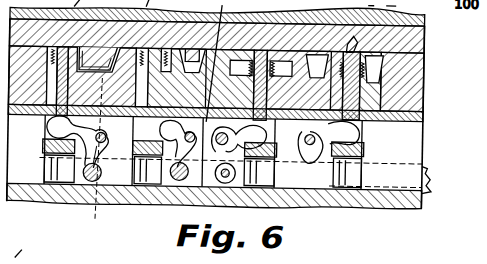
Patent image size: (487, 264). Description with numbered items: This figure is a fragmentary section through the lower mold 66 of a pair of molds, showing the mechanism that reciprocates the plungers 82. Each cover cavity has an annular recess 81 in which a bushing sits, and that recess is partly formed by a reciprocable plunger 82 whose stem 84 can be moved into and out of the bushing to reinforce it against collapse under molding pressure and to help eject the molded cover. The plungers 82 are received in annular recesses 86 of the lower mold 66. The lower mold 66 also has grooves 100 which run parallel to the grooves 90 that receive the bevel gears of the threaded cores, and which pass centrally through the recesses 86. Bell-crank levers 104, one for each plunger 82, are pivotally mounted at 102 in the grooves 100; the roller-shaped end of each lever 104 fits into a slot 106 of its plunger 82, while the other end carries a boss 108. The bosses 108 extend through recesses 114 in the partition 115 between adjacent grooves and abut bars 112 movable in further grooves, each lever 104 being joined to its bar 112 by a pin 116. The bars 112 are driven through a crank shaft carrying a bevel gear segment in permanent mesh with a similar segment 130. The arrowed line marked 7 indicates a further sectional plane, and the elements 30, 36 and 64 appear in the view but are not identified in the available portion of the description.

The punch tool / section line 7- 7 is at (118, 92).
The base plate 30 is at (402, 205).
The upper member 36 is at (214, 61).
The drive element 64 is at (32, 249).
The lower mold 66 is at (423, 109).
The annular recess 81 is at (53, 89).
The stem 84 is at (166, 93).
The annular recess 86 is at (56, 171).
The reciprocable plunger 82 is at (43, 151).
The parallel groove 90 is at (217, 13).
The groove 100 is at (424, 149).
The pivot 102 is at (106, 140).
The bell-crank lever 104 is at (105, 144).
The slot 106 is at (45, 125).
The boss 108 is at (84, 192).
The bar 112 is at (434, 176).
The recess 114 is at (220, 183).
The partition 115 is at (302, 162).
The pin 116 is at (101, 200).
The bevel gear segment 130 is at (404, 5).